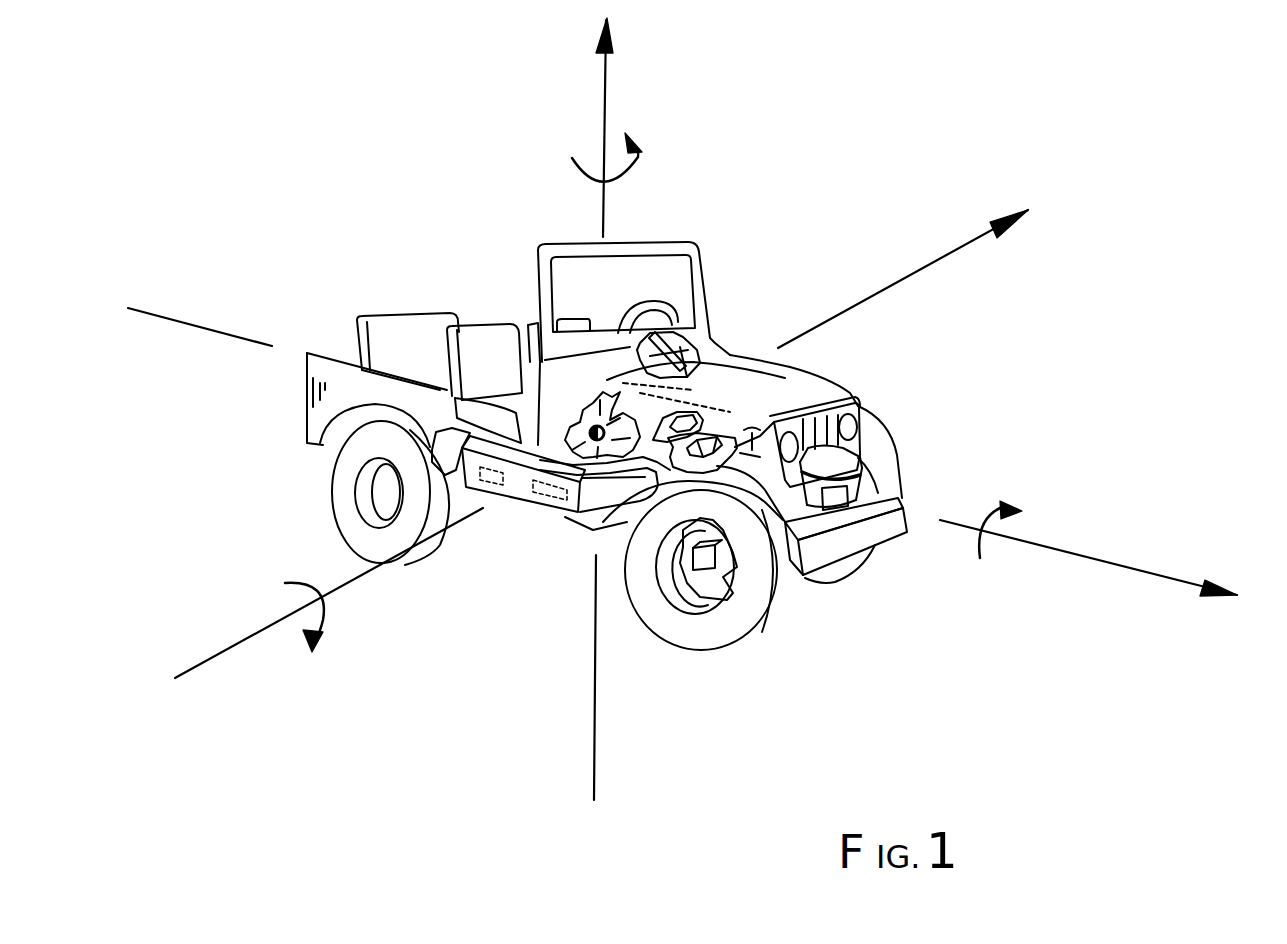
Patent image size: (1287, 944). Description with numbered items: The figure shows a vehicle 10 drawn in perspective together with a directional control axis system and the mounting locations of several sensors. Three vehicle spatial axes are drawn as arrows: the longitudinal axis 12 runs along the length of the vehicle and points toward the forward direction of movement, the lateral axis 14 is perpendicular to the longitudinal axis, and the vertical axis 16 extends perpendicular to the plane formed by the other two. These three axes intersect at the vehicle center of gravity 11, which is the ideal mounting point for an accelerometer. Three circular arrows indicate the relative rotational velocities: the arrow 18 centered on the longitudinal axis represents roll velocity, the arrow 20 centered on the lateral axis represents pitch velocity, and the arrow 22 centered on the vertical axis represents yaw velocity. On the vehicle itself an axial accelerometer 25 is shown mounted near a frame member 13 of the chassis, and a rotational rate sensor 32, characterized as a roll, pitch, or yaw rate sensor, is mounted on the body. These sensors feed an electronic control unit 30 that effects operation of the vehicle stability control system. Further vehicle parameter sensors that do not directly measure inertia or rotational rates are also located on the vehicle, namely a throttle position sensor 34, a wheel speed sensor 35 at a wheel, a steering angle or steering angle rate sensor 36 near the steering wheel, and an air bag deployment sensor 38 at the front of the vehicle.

The vehicle 10 is at (348, 210).
The vehicle center of gravity 11 is at (608, 418).
The longitudinal axis 12 is at (1048, 548).
The frame member 13 is at (457, 464).
The lateral axis 14 is at (888, 282).
The vertical axis 16 is at (607, 128).
The roll velocity arrow 18 is at (955, 459).
The pitch velocity arrow 20 is at (333, 616).
The yaw velocity arrow 22 is at (638, 173).
The axial accelerometer 25 is at (492, 495).
The electronic control unit 30 is at (533, 503).
The rotational rate sensor 32 is at (717, 437).
The throttle position sensor 34 is at (705, 428).
The wheel speed sensor 35 is at (710, 557).
The steering angle sensor 36 is at (688, 348).
The air bag deployment sensor 38 is at (850, 502).